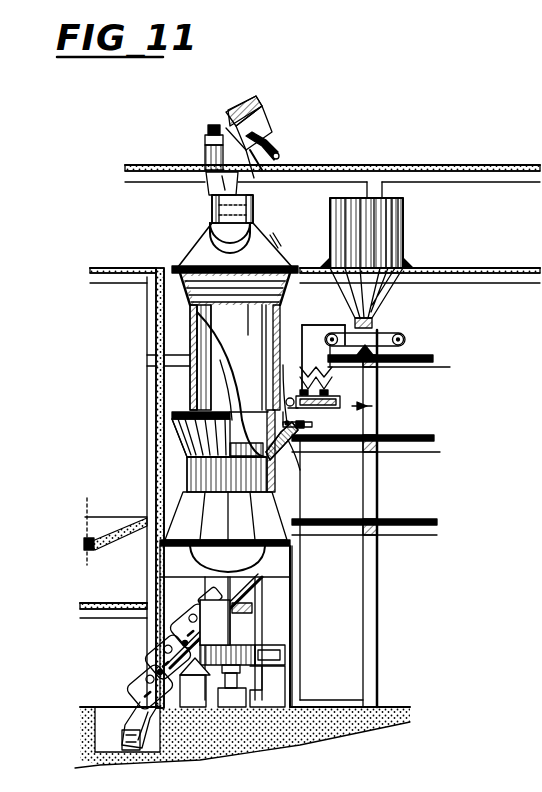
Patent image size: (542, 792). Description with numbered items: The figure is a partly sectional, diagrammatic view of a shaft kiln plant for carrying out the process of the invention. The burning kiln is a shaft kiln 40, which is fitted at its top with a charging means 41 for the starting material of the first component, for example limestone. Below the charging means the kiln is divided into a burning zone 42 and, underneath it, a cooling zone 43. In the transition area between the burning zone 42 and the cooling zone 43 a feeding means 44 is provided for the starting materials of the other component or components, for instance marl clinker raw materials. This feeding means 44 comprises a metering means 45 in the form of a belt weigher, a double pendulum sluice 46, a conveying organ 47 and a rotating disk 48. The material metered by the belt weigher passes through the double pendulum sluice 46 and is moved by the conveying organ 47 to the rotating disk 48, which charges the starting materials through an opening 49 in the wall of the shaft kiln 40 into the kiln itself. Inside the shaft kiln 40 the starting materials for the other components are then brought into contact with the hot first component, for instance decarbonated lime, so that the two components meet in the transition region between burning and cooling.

The shaft kiln 40 is at (178, 378).
The charging means 41 is at (217, 222).
The burning zone 42 is at (182, 343).
The cooling zone 43 is at (182, 472).
The feeding means 44 is at (372, 407).
The metering means 45 is at (387, 330).
The double pendulum sluice 46 is at (322, 387).
The conveying organ 47 is at (310, 409).
The rotating disk 48 is at (283, 365).
The opening 49 is at (290, 457).